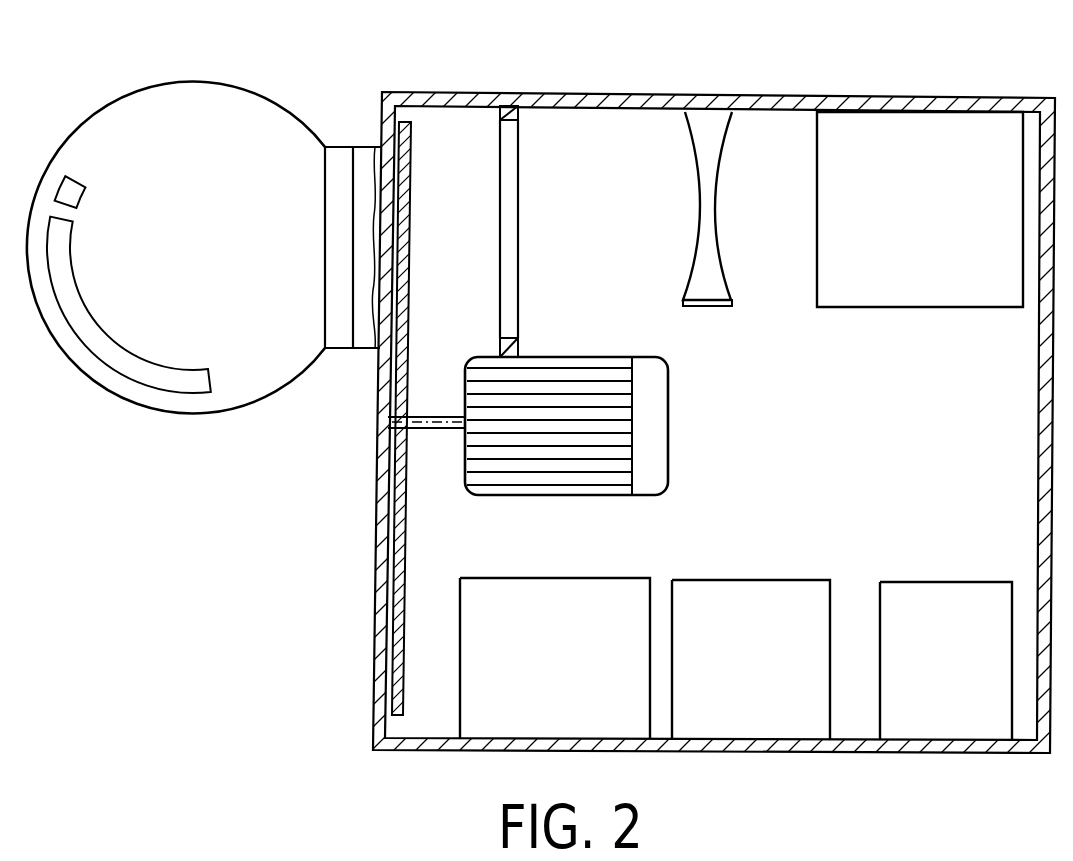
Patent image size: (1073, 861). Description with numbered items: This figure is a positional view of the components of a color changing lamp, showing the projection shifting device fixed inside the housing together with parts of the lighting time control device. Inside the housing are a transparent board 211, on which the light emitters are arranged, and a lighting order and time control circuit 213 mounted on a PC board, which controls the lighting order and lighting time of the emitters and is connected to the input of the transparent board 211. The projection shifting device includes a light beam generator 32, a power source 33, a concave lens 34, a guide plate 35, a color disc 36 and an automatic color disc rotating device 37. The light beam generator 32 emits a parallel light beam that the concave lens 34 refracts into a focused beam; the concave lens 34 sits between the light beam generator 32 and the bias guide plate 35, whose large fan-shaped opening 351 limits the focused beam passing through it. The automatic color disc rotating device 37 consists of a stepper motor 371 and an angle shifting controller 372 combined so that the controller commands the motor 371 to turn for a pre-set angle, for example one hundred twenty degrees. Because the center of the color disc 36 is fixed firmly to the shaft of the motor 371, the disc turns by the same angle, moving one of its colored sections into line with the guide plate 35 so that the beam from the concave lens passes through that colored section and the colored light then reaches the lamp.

The transparent board 211 is at (381, 148).
The guide plate 35 is at (510, 98).
The fan-shaped opening 351 is at (509, 163).
The concave lens 34 is at (710, 125).
The light beam generator 32 is at (887, 128).
The automatic color disc rotating device 37 is at (429, 444).
The stepper motor 371 is at (470, 472).
The color disc 36 is at (397, 587).
The angle shifting controller 372 is at (627, 720).
The lighting order and time control circuit 213 is at (762, 718).
The power source 33 is at (937, 720).